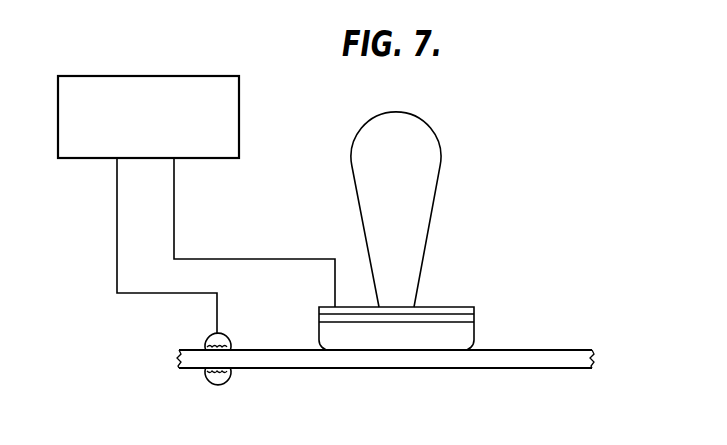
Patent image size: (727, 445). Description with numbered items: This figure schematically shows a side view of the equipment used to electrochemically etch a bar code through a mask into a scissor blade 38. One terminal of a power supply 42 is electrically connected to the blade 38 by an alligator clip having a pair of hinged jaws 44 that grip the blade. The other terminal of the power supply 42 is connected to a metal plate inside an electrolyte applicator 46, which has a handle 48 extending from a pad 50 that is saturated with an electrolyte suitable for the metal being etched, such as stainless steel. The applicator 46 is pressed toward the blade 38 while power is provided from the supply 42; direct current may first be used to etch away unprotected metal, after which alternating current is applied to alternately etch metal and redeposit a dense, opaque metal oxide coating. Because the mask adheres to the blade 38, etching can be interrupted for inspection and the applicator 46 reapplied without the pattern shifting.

The blade 38 is at (540, 362).
The power supply 42 is at (239, 127).
The hinged jaws 44 is at (226, 333).
The electrolyte applicator 46 is at (416, 231).
The handle 48 is at (360, 163).
The pad 50 is at (475, 328).